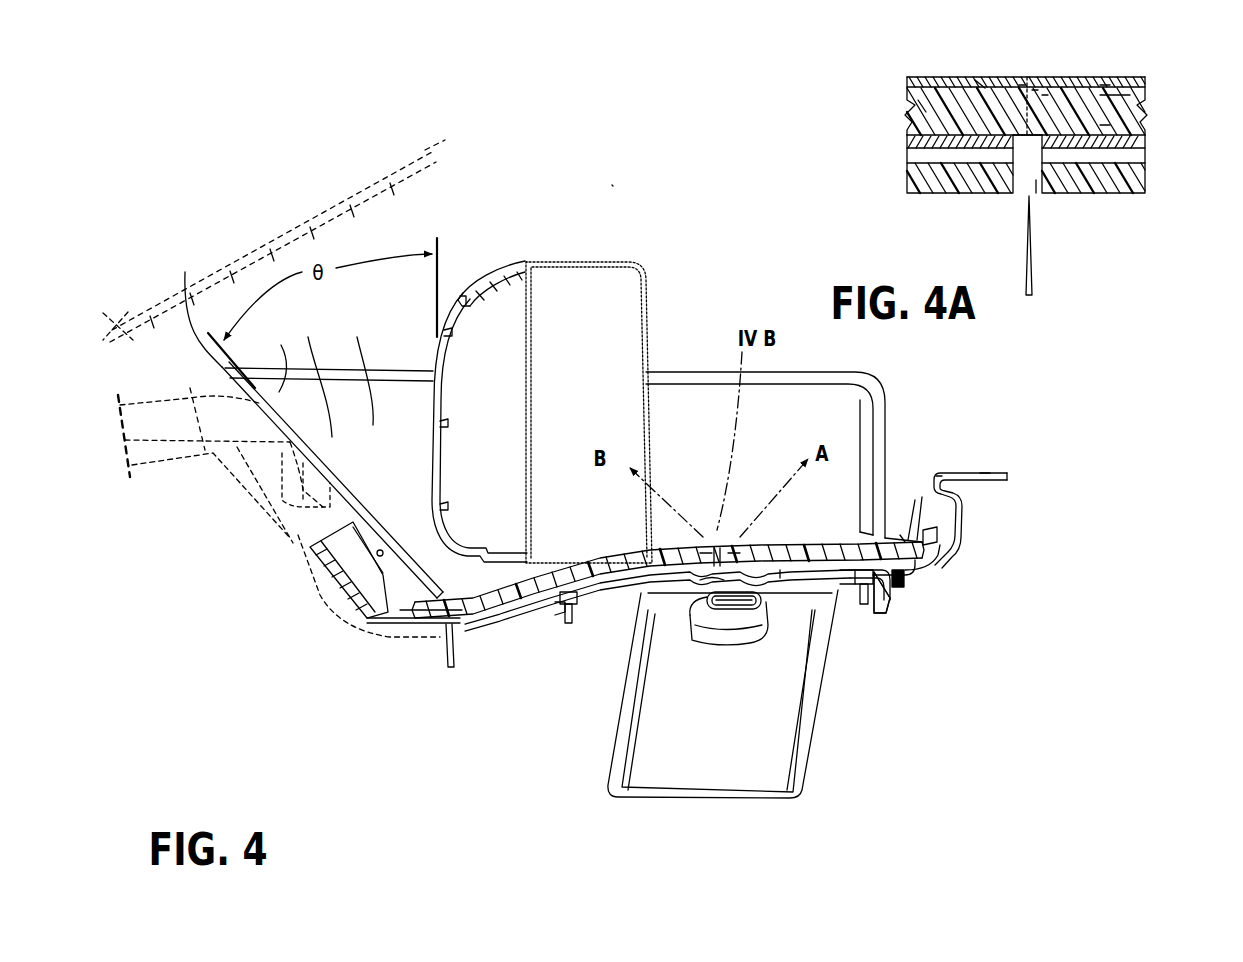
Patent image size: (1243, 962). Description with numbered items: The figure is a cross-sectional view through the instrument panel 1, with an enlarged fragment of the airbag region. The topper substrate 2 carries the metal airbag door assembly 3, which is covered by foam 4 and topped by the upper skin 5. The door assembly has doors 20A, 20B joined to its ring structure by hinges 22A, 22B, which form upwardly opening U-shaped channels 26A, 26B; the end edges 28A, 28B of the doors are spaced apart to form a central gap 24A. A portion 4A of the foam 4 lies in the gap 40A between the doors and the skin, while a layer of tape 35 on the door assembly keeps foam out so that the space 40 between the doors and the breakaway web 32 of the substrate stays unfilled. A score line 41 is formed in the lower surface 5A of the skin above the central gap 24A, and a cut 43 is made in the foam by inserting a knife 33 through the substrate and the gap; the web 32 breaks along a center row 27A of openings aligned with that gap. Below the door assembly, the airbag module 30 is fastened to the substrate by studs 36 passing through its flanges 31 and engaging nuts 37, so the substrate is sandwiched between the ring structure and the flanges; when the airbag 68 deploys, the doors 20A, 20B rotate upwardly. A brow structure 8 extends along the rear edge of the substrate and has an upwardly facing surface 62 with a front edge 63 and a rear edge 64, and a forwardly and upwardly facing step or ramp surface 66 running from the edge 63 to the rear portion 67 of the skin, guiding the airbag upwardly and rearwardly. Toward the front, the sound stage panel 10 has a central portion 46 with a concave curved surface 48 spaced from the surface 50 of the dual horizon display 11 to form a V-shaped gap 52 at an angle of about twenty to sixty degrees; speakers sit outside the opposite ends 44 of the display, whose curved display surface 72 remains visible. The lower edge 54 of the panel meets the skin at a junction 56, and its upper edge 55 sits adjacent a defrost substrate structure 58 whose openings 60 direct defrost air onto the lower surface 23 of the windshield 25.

In FIG. 4, the instrument panel 1 is at (613, 185).
In FIG. 4, the topper substrate 2 is at (905, 576).
In FIG. 4A, the topper substrate 2 is at (950, 196).
In FIG. 4A, the metal airbag door assembly 3 is at (903, 134).
In FIG. 4, the foam 4 is at (912, 552).
In FIG. 4A, the foam 4 is at (910, 100).
In FIG. 4A, the portion of foam 4A is at (1130, 100).
In FIG. 4, the upper skin 5 is at (631, 550).
In FIG. 4A, the upper skin 5 is at (980, 82).
In FIG. 4A, the lower surface of upper skin 5A is at (912, 95).
In FIG. 4, the brow structure 8 is at (1003, 472).
In FIG. 4, the sound stage panel 10 is at (409, 365).
In FIG. 4, the dual horizon display 11 is at (528, 262).
In FIG. 4A, the door 20A is at (1105, 130).
In FIG. 4A, the door 20B is at (922, 100).
In FIG. 4, the hinge 22A is at (795, 578).
In FIG. 4, the hinge 22B is at (713, 640).
In FIG. 4, the lower surface of windshield 23 is at (395, 180).
In FIG. 4A, the central gap 24A is at (1040, 196).
In FIG. 4, the windshield 25 is at (425, 178).
In FIG. 4, the U-shaped channel 26A is at (823, 553).
In FIG. 4, the U-shaped channel 26B is at (572, 580).
In FIG. 4, the center row of openings 27A is at (720, 585).
In FIG. 4A, the center row of openings 27A is at (1021, 180).
In FIG. 4A, the end edge 28A is at (1045, 95).
In FIG. 4, the end edge 28B is at (710, 553).
In FIG. 4A, the end edge 28B is at (1010, 120).
In FIG. 4, the airbag module 30 is at (820, 745).
In FIG. 4, the flange 31 is at (548, 603).
In FIG. 4, the breakaway web 32 is at (810, 600).
In FIG. 4A, the breakaway web 32 is at (1092, 195).
In FIG. 4A, the knife 33 is at (1033, 265).
In FIG. 4A, the tape 35 is at (1148, 128).
In FIG. 4, the stud 36 is at (560, 617).
In FIG. 4, the nut 37 is at (882, 592).
In FIG. 4A, the space 40 is at (1102, 156).
In FIG. 4A, the gap 40A is at (1105, 85).
In FIG. 4A, the score line 41 is at (1035, 90).
In FIG. 4A, the cut 43 is at (1021, 85).
In FIG. 4, the opposite ends of dual horizon display 44 is at (661, 316).
In FIG. 4, the central portion 46 is at (275, 355).
In FIG. 4, the concave curved surface 48 is at (315, 372).
In FIG. 4, the surface of display 50 is at (452, 290).
In FIG. 4, the gap 52 is at (353, 366).
In FIG. 4, the lower edge 54 is at (437, 597).
In FIG. 4, the upper edge 55 is at (310, 418).
In FIG. 4, the junction 56 is at (432, 607).
In FIG. 4, the defrost substrate structure 58 is at (190, 385).
In FIG. 4, the opening 60 is at (118, 395).
In FIG. 4, the upwardly facing surface 62 is at (985, 475).
In FIG. 4, the front edge 63 is at (941, 472).
In FIG. 4, the rear edge 64 is at (1008, 478).
In FIG. 4, the step or ramp surface 66 is at (915, 500).
In FIG. 4, the rear portion of upper skin 67 is at (900, 535).
In FIG. 4, the airbag 68 is at (715, 640).
In FIG. 4, the curved display surface 72 is at (583, 300).